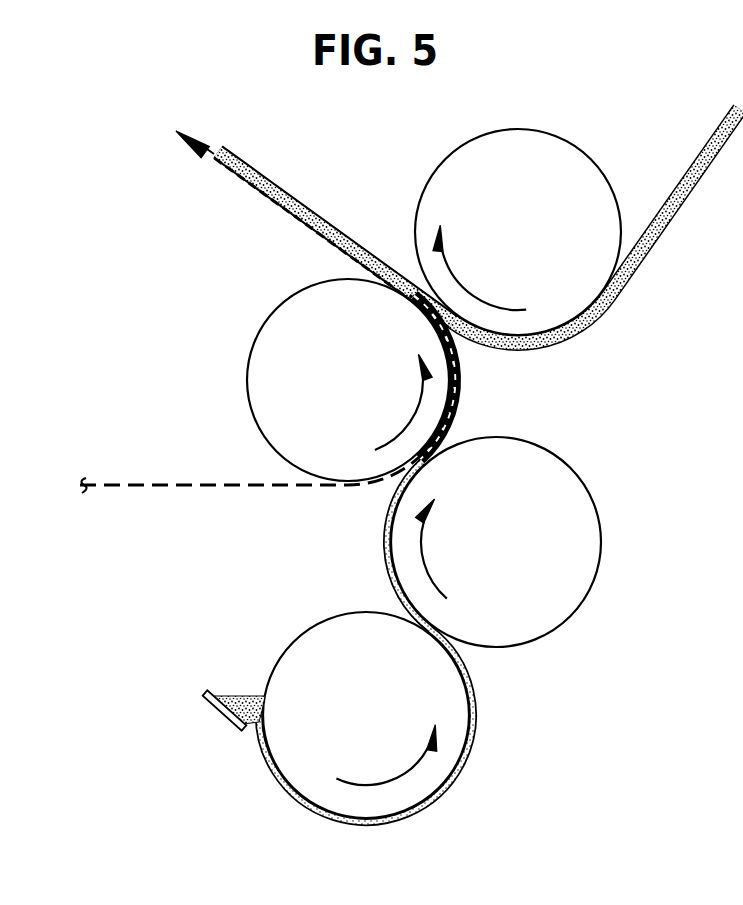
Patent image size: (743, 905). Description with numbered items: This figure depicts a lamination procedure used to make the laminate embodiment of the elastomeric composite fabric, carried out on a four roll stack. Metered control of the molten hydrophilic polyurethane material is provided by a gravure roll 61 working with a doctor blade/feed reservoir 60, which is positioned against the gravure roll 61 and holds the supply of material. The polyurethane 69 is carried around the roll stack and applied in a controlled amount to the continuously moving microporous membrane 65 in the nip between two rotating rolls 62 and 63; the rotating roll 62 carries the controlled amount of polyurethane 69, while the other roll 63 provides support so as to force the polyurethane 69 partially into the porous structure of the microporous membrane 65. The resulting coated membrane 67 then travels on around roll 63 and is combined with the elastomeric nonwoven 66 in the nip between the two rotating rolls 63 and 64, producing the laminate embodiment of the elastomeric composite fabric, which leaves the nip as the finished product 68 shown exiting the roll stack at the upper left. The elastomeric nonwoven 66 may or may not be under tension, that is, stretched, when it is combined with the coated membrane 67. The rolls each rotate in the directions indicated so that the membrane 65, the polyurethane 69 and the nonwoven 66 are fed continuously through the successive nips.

The doctor blade/feed reservoir 60 is at (212, 731).
The gravure roll 61 is at (383, 729).
The rotating roll 62 is at (514, 562).
The rotating roll 63 is at (363, 397).
The rotating roll 64 is at (536, 251).
The microporous membrane 65 is at (119, 514).
The elastomeric nonwoven 66 is at (688, 118).
The coated membrane 67 is at (500, 392).
The coated web 68 is at (244, 205).
The polyurethane 69 is at (358, 548).